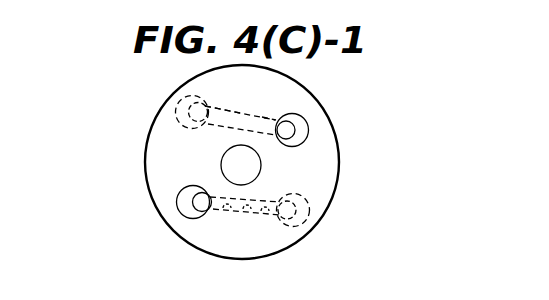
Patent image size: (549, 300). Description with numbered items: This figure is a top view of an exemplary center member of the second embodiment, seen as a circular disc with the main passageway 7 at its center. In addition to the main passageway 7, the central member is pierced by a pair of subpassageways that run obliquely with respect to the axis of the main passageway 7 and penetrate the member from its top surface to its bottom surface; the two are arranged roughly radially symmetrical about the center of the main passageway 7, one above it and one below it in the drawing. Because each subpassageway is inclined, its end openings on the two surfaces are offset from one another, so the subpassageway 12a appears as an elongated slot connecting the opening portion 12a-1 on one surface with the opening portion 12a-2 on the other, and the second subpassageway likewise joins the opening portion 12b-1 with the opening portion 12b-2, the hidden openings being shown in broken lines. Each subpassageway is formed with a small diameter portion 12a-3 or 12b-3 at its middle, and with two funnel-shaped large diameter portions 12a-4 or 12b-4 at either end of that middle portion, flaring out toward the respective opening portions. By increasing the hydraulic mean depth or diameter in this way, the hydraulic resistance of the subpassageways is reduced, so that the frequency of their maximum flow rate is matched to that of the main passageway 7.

The main passageway 7 is at (262, 166).
The subpassageway 12a is at (226, 123).
The opening portion 12a-1 is at (306, 133).
The opening portion 12a-2 is at (180, 112).
The small diameter portion 12a-3 is at (272, 118).
The funnel-shaped large diameter portion 12a-4 is at (214, 108).
The opening portion 12b-1 is at (182, 208).
The opening portion 12b-2 is at (312, 214).
The small diameter portion 12b-3 is at (250, 213).
The funnel-shaped large diameter portion 12b-4 is at (212, 216).